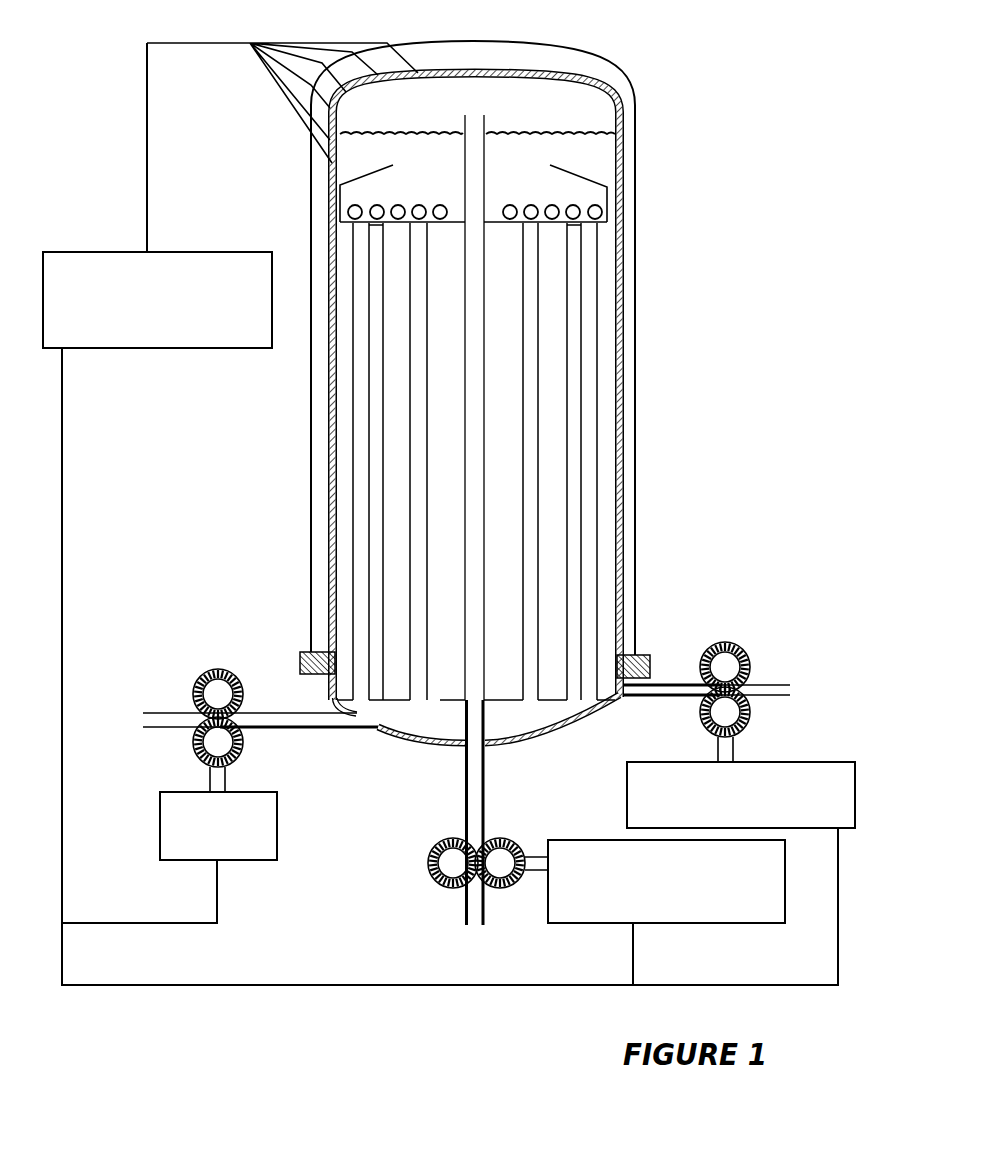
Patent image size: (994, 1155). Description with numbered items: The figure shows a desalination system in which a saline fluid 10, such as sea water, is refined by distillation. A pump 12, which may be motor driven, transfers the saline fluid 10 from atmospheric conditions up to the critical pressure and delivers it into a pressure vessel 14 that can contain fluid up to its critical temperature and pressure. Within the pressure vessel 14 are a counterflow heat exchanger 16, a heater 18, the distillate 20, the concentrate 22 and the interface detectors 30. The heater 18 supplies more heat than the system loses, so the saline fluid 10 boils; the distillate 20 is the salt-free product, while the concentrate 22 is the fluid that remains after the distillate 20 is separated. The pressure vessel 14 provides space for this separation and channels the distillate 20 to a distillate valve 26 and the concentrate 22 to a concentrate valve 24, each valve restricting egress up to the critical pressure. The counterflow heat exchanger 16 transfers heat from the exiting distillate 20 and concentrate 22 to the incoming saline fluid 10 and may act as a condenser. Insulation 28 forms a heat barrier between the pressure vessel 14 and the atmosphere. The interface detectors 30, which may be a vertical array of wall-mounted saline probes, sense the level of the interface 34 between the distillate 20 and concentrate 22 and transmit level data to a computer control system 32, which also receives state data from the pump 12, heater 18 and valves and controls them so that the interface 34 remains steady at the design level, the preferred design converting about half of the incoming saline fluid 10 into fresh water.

The saline fluid 10 is at (225, 718).
The pump 12 is at (218, 813).
The pressure vessel 14 is at (499, 739).
The counterflow heat exchanger 16 is at (476, 520).
The heater 18 is at (401, 432).
The distillate 20 is at (475, 394).
The concentrate 22 is at (549, 420).
The concentrate valve 24 is at (739, 735).
The distillate valve 26 is at (606, 880).
The insulation 28 is at (482, 348).
The interface detectors 30 is at (282, 84).
The computer control system 32 is at (440, 514).
The interface 34 is at (477, 122).